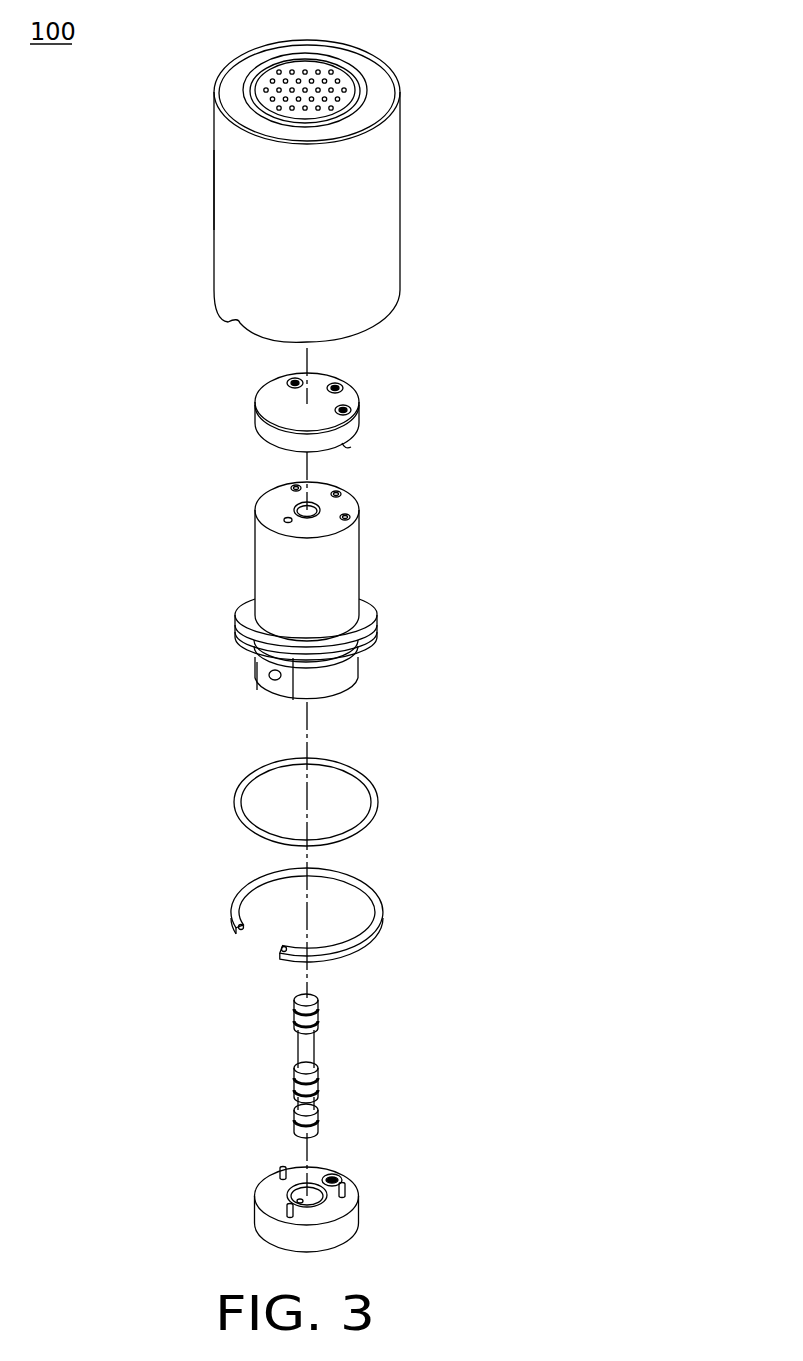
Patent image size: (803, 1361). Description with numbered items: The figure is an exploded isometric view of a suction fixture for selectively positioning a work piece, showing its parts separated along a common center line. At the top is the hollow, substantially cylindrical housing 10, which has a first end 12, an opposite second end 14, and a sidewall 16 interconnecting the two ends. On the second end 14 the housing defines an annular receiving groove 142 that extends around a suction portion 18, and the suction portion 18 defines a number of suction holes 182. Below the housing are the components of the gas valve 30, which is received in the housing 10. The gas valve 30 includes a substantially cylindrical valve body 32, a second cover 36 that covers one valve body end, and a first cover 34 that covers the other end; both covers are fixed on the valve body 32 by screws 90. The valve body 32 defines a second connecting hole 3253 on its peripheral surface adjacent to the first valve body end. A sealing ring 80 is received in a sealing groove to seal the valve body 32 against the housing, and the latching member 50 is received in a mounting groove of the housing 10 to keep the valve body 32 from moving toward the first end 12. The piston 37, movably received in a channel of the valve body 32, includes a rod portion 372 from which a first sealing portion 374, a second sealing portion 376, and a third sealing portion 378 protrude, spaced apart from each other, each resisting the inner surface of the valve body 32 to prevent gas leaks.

The housing 10 is at (409, 218).
The first end 12 is at (393, 313).
The second end 14 is at (380, 82).
The annular receiving groove 142 is at (247, 97).
The sidewall 16 is at (227, 243).
The suction portion 18 is at (291, 68).
The suction holes 182 is at (319, 68).
The second cover 36 is at (273, 407).
The gas valve 30 is at (367, 552).
The valve body 32 is at (281, 572).
The second connecting hole 3253 is at (267, 680).
The sealing ring 80 is at (369, 794).
The latching member 50 is at (368, 897).
The piston 37 is at (286, 1068).
The third sealing portion 378 is at (320, 1012).
The rod portion 372 is at (312, 1055).
The second sealing portion 376 is at (320, 1087).
The first sealing portion 374 is at (318, 1123).
The first cover 34 is at (262, 1222).
The screws 90 is at (353, 1190).